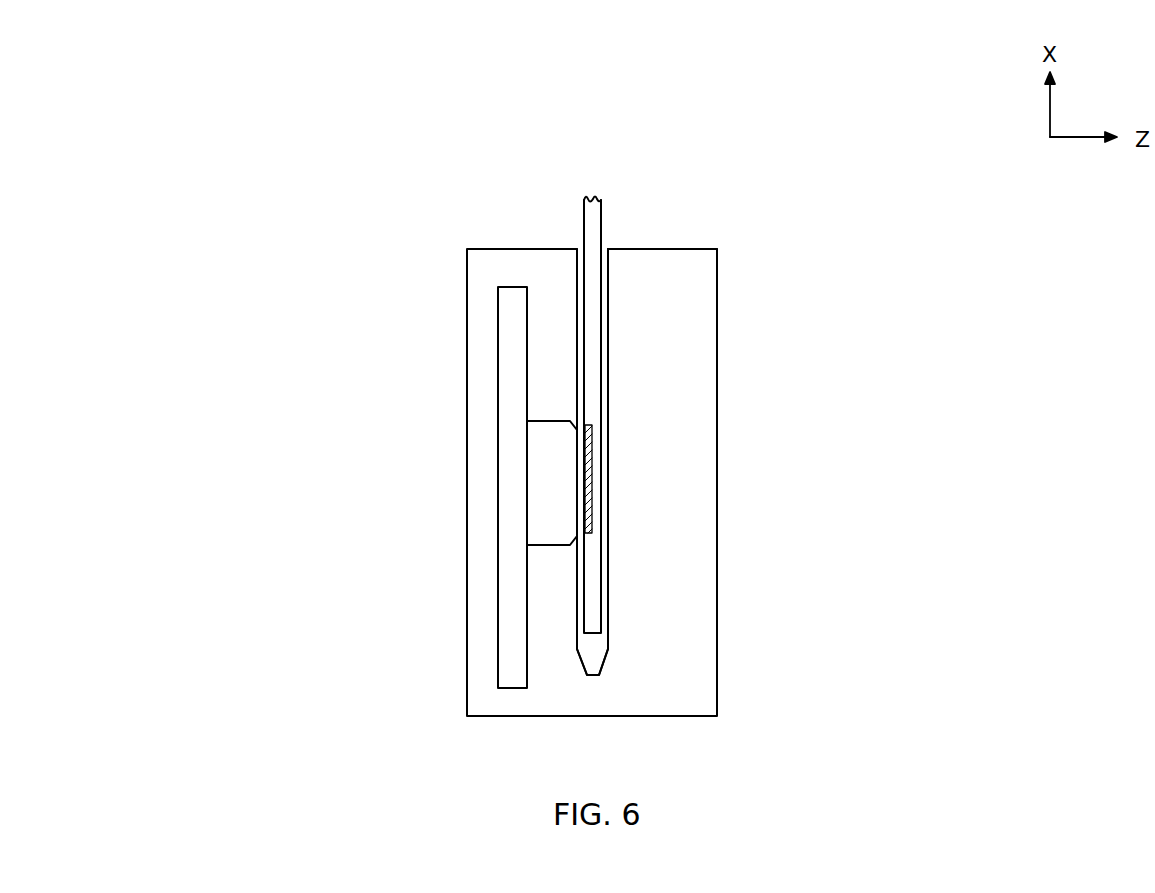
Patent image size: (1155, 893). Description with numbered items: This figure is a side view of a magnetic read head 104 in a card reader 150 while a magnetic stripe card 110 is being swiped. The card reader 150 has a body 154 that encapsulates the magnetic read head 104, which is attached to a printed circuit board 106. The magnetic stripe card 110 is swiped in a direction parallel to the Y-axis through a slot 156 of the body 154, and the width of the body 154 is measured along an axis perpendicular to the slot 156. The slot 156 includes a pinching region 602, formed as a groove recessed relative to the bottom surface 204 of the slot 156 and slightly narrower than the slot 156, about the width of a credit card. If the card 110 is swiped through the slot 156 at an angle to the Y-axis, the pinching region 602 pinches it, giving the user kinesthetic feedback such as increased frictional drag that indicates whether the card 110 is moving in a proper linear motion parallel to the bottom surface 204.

The card reader 150 is at (367, 218).
The body 154 is at (717, 698).
The slot 156 is at (617, 252).
The bottom surface 204 is at (627, 650).
The pinching region 602 is at (576, 667).
The magnetic stripe card 110 is at (584, 214).
The printed circuit board 106 is at (510, 287).
The magnetic read head 104 is at (556, 421).